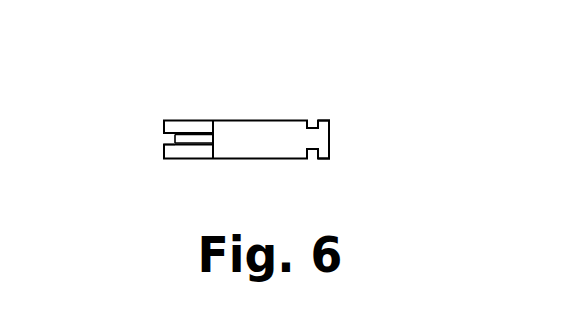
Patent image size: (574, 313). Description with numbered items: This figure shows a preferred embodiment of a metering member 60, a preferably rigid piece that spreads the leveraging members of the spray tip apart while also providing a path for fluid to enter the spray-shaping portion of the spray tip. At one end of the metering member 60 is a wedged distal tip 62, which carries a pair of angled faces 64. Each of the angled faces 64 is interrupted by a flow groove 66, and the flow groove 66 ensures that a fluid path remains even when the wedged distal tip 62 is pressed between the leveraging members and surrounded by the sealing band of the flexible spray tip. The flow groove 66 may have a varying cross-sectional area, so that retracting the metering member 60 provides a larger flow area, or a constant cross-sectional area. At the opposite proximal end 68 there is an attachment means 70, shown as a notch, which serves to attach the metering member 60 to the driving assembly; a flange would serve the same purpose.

The metering member 60 is at (137, 76).
The wedged distal tip 62 is at (197, 107).
The angled faces 64 is at (197, 148).
The flow groove 66 is at (163, 138).
The proximal end 68 is at (329, 138).
The attachment means 70 is at (315, 127).